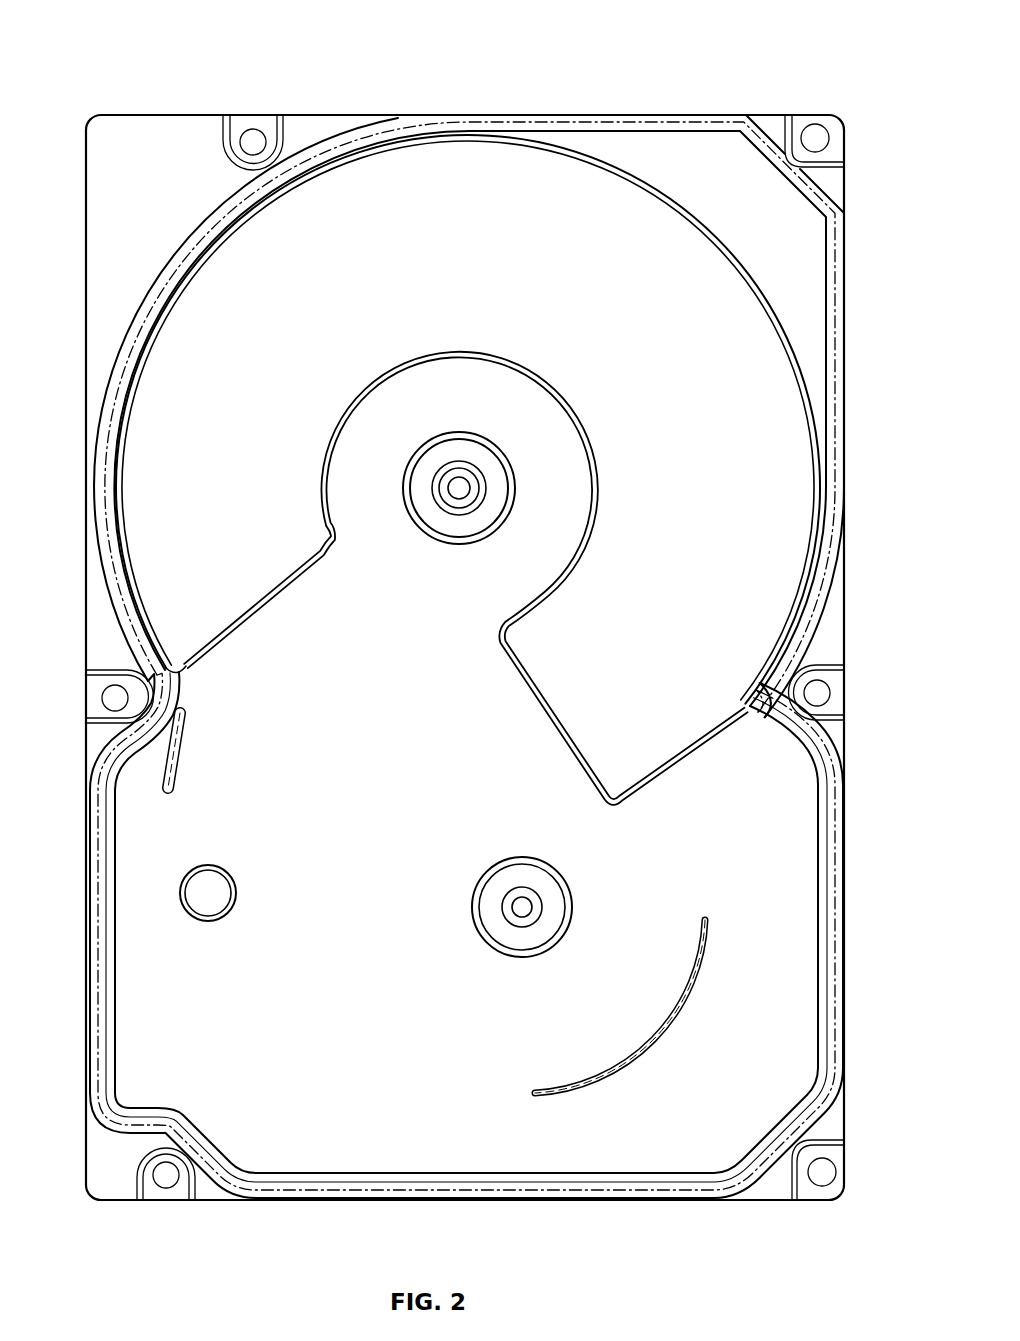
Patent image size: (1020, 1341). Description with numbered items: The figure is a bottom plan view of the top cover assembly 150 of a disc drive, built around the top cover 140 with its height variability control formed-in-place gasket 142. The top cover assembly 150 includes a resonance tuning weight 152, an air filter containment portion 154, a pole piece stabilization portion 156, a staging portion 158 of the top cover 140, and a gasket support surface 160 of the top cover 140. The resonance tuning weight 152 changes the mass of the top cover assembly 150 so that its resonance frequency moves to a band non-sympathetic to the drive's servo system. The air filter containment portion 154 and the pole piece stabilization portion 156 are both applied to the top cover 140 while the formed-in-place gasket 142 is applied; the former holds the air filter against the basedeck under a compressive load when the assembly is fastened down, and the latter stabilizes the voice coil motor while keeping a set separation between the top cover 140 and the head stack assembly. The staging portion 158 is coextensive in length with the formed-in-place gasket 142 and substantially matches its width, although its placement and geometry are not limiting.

The top cover 140 is at (160, 165).
The formed-in-place gasket 142 is at (836, 478).
The top cover assembly 150 is at (360, 50).
The resonance tuning weight 152 is at (484, 197).
The air filter containment portion 154 is at (183, 753).
The pole piece stabilization portion 156 is at (688, 998).
The staging portion 158 is at (860, 896).
The gasket support surface 160 is at (825, 640).